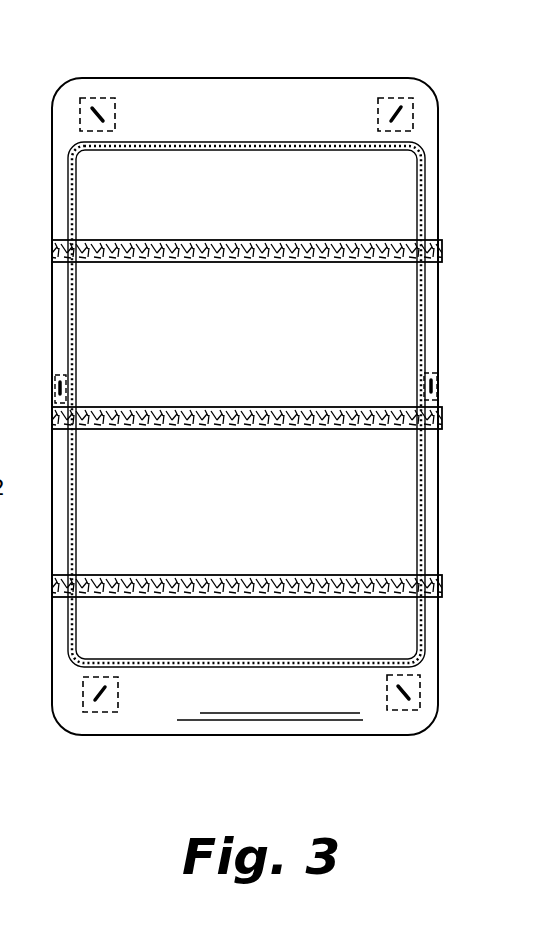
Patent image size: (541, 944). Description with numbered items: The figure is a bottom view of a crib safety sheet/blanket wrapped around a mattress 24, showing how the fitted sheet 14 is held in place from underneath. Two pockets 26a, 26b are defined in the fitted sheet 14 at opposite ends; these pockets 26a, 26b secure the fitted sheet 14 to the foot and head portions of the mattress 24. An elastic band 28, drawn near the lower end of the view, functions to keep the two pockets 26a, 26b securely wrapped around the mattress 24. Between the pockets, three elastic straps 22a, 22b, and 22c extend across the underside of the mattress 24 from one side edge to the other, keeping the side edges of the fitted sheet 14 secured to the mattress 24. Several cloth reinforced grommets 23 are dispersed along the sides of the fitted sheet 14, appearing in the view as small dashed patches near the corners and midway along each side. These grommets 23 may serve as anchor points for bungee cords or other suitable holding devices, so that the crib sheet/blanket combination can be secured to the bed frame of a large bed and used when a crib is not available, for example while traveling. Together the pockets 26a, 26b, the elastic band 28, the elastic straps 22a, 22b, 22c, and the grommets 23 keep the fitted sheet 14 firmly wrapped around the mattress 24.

The fitted sheet 14 is at (433, 700).
The elastic strap 22a is at (443, 247).
The elastic strap 22b is at (443, 418).
The elastic strap 22c is at (443, 588).
The cloth reinforced grommet 23 is at (80, 98).
The mattress 24 is at (262, 339).
The pocket 26a is at (287, 103).
The pocket 26b is at (308, 695).
The elastic band 28 is at (337, 668).